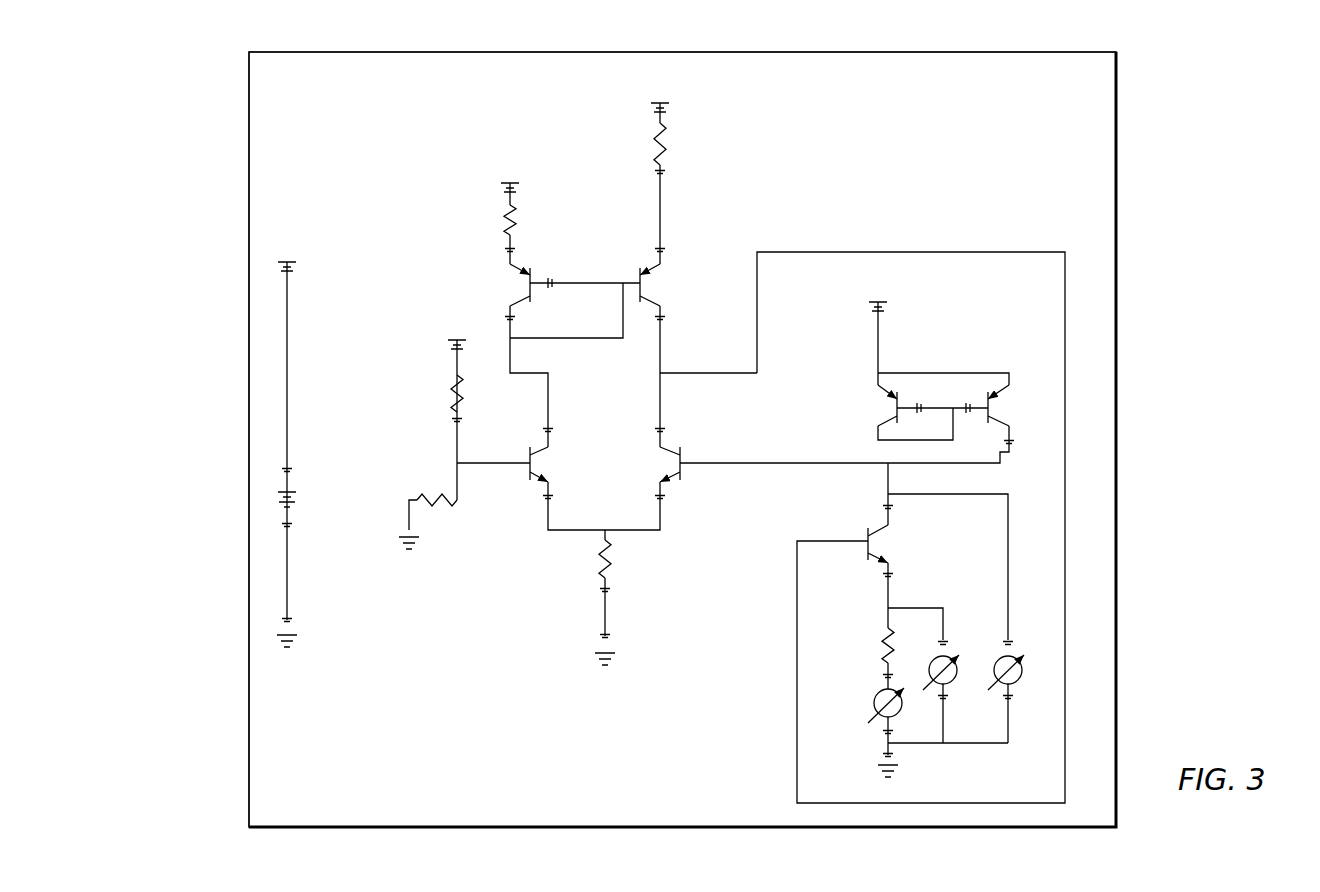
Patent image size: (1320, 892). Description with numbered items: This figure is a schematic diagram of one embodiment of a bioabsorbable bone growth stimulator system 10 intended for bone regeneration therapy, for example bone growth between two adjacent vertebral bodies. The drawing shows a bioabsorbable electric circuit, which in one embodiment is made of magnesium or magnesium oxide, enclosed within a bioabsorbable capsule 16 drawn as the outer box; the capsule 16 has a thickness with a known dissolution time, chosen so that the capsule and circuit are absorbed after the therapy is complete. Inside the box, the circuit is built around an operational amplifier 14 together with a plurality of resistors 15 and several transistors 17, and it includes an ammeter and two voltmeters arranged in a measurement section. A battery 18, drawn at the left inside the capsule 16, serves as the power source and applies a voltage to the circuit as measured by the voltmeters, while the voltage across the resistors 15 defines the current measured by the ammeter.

The bioabsorbable bone growth stimulator system 10 is at (204, 132).
The operational amplifier 14 is at (608, 395).
The resistors 15 is at (510, 216).
The bioabsorbable capsule 16 is at (249, 737).
The transistor 17 is at (524, 272).
The battery 18 is at (298, 500).